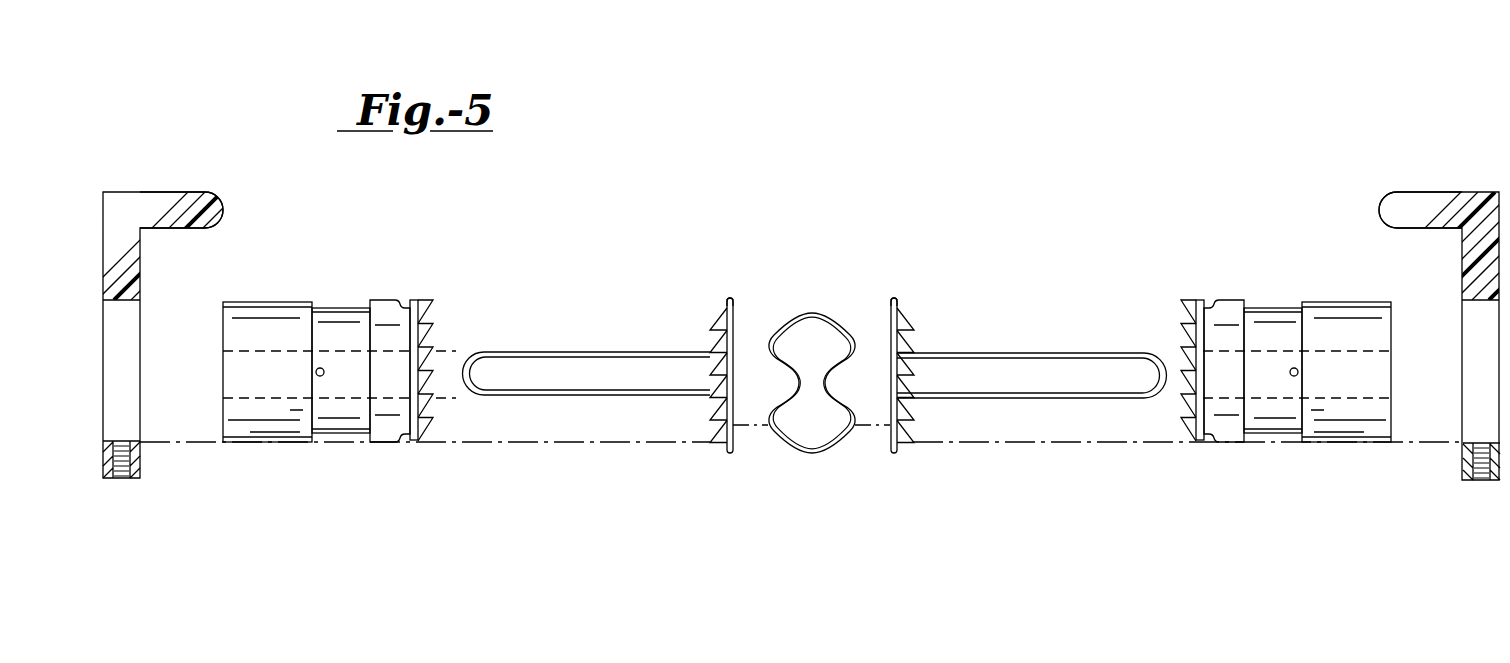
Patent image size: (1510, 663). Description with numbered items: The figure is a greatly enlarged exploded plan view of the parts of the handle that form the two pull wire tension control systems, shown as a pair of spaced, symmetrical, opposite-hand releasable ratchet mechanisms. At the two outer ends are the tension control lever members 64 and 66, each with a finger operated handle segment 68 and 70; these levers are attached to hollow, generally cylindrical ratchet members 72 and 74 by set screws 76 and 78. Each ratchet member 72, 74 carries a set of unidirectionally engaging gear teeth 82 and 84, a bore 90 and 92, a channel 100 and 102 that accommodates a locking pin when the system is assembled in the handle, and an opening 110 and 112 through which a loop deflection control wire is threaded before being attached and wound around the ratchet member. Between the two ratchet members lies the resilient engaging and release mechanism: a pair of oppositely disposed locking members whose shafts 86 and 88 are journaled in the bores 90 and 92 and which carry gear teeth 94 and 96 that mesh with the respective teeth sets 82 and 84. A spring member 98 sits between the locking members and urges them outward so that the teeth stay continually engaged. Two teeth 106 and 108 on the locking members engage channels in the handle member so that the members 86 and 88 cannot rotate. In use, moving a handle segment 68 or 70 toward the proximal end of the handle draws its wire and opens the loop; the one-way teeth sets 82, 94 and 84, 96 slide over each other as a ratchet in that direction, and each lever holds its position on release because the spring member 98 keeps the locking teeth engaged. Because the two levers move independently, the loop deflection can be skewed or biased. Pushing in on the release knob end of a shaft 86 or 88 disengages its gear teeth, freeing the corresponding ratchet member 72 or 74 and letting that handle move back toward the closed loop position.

The tension control lever member 64 is at (123, 187).
The tension control lever member 66 is at (1465, 185).
The finger operated handle segment 68 is at (177, 191).
The finger operated handle segment 70 is at (1413, 193).
The ratchet member 72 is at (270, 295).
The ratchet member 74 is at (1350, 295).
The set screw 76 is at (115, 478).
The set screw 78 is at (1480, 480).
The gear teeth 82 is at (433, 405).
The gear teeth 84 is at (1183, 400).
The shaft 86 is at (528, 352).
The shaft 88 is at (977, 353).
The bore 90 is at (270, 430).
The bore 92 is at (1230, 305).
The gear teeth 94 is at (720, 447).
The gear teeth 96 is at (903, 447).
The spring member 98 is at (817, 313).
The channel 100 is at (405, 437).
The channel 102 is at (1212, 440).
The tooth 106 is at (732, 298).
The tooth 108 is at (893, 298).
The opening 110 is at (321, 376).
The opening 112 is at (1291, 376).